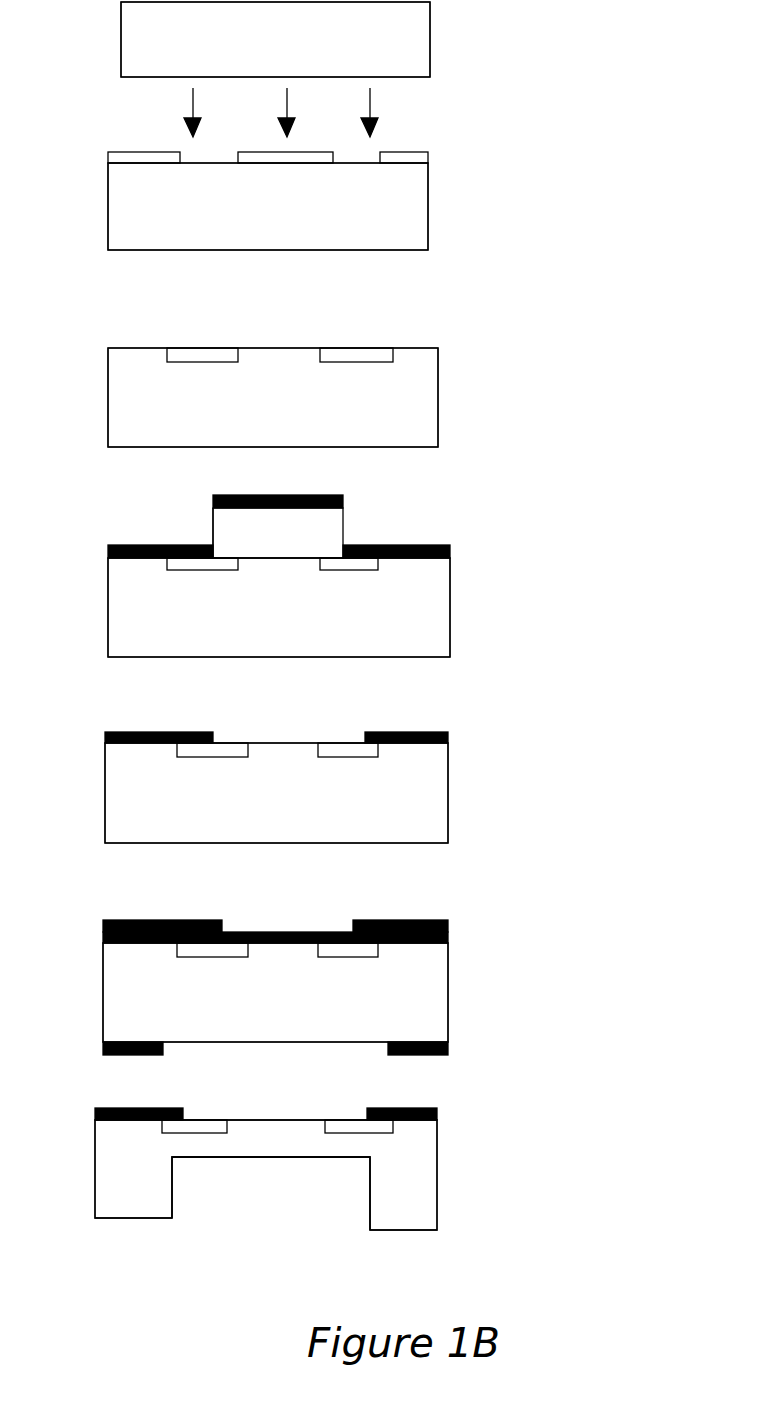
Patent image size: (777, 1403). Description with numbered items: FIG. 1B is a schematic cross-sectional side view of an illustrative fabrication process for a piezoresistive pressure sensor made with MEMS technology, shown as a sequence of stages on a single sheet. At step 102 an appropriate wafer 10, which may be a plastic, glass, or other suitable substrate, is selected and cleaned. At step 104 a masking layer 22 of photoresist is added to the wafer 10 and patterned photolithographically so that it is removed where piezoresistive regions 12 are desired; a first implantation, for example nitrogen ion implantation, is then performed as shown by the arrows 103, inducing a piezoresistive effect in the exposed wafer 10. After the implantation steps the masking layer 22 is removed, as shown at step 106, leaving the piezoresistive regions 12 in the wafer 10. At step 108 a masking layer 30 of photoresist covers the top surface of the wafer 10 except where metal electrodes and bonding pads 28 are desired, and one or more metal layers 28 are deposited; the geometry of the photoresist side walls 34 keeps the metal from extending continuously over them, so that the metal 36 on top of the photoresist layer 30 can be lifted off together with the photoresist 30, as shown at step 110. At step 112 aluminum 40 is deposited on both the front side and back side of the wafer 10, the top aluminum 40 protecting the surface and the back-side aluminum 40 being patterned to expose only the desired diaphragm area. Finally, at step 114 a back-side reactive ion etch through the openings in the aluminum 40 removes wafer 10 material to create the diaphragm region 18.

The wafer 10 is at (125, 33).
The piezoresistive regions 12 is at (177, 567).
The diaphragm region 18 is at (272, 1150).
The masking layer 22 is at (130, 157).
The metal electrodes and/or bonding pads 28 is at (420, 545).
The masking layer of photoresist 30 is at (330, 518).
The photoresist side walls 34 is at (213, 523).
The metal on the photoresist layer 36 is at (280, 495).
The aluminum layer 40 is at (140, 920).
The arrows indicating first implantation 103 is at (190, 104).
The wafer selection step 102 is at (392, 39).
The masking layer addition step 104 is at (385, 206).
The masking layer removal step 106 is at (384, 397).
The metal deposition step 108 is at (384, 607).
The photoresist removal and lift-off step 110 is at (383, 793).
The aluminum deposition and patterning step 112 is at (382, 992).
The diaphragm etching step 114 is at (373, 1175).